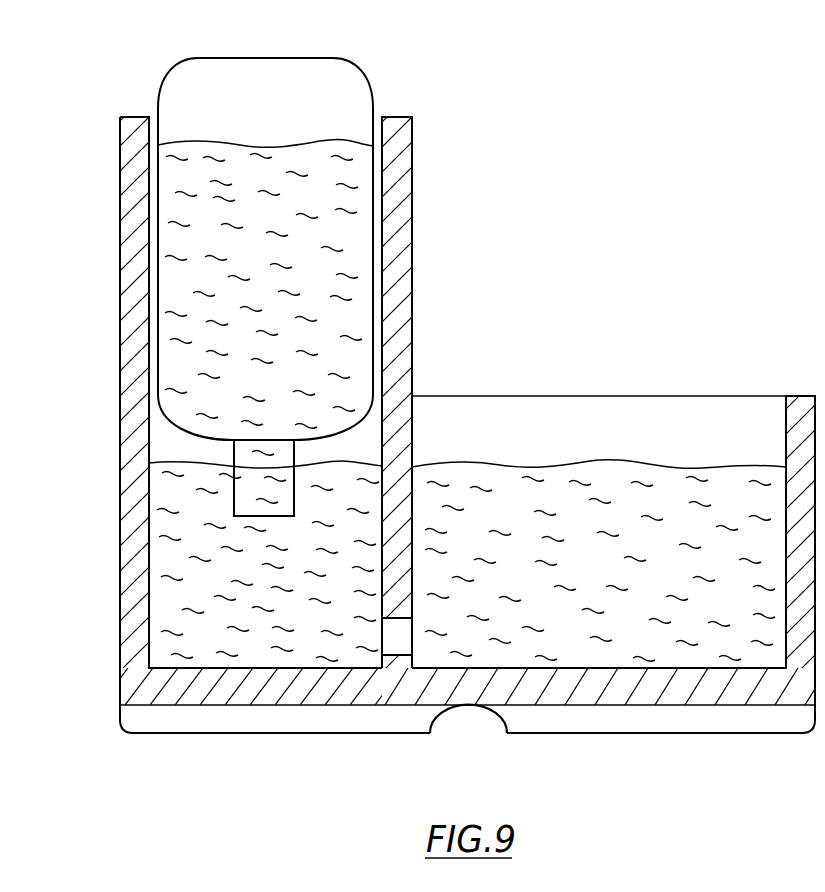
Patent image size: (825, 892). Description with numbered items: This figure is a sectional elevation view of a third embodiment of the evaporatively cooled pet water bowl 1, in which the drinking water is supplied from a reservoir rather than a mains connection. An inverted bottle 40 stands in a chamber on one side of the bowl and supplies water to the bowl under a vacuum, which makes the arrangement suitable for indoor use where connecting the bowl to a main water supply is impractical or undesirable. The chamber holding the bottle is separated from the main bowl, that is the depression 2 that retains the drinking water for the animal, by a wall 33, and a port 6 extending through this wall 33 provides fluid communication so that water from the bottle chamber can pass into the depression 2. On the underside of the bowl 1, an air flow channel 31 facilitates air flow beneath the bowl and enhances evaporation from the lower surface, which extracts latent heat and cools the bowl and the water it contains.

The bowl 1 is at (473, 166).
The depression 2 is at (607, 441).
The port 6 is at (392, 640).
The air flow channels 31 is at (463, 725).
The wall 33 is at (412, 288).
The inverted bottle 40 is at (238, 85).